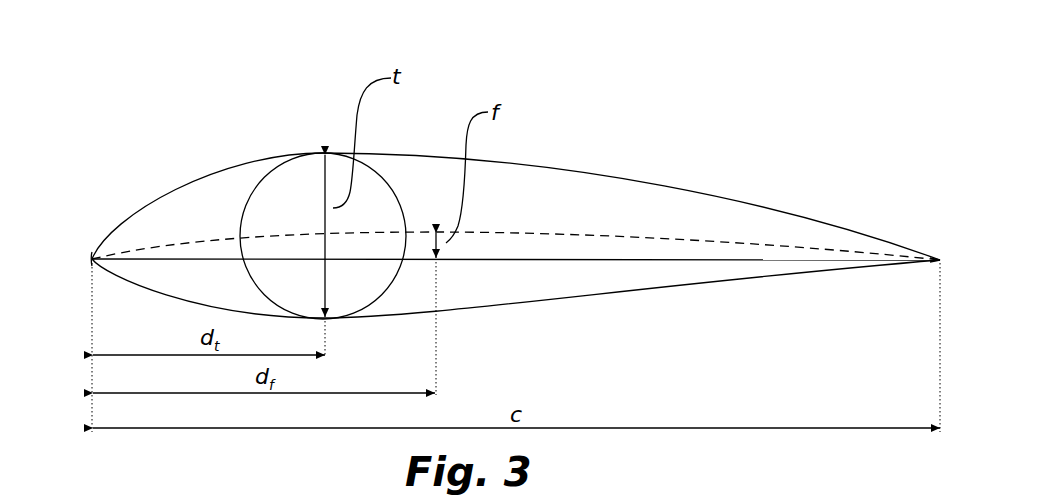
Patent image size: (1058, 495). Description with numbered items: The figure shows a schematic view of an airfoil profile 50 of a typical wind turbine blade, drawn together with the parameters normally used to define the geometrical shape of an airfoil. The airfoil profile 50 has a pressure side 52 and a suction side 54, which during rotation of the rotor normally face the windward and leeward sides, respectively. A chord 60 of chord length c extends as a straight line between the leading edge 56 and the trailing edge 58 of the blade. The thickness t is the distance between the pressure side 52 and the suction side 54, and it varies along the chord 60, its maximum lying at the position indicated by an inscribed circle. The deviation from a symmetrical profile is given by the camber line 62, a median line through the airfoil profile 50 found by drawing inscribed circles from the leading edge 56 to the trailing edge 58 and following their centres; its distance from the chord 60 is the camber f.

The airfoil profile 50 is at (488, 72).
The pressure side 52 is at (687, 281).
The suction side 54 is at (620, 172).
The leading edge 56 is at (92, 258).
The trailing edge 58 is at (938, 255).
The chord 60 is at (723, 258).
The camber line 62 is at (503, 231).